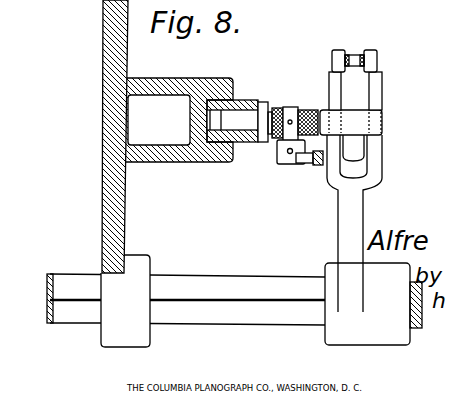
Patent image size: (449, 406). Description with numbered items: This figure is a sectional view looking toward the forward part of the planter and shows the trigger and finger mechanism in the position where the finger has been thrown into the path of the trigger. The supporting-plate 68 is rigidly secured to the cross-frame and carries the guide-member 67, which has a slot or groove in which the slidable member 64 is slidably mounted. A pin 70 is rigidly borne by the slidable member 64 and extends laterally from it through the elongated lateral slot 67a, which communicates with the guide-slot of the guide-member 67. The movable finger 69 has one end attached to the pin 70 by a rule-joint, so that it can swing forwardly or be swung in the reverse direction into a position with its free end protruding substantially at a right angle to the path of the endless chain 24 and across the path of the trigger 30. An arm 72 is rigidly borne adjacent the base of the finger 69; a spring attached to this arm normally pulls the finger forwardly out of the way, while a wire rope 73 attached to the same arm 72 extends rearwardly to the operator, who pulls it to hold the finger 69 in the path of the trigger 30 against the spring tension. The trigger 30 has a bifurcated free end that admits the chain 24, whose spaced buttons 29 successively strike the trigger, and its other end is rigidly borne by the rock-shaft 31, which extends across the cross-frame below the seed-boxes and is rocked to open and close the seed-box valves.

The supporting-plate 68 is at (104, 47).
The guide-member 67 is at (165, 73).
The elongated lateral slot 67a is at (225, 112).
The slidable member 64 is at (213, 138).
The pin 70 is at (247, 117).
The arm 72 is at (303, 165).
The wire rope 73 is at (320, 168).
The movable finger 69 is at (372, 128).
The trigger 30 is at (383, 93).
The buttons 29 is at (332, 58).
The endless chain 24 is at (348, 56).
The rock-shaft 31 is at (63, 289).